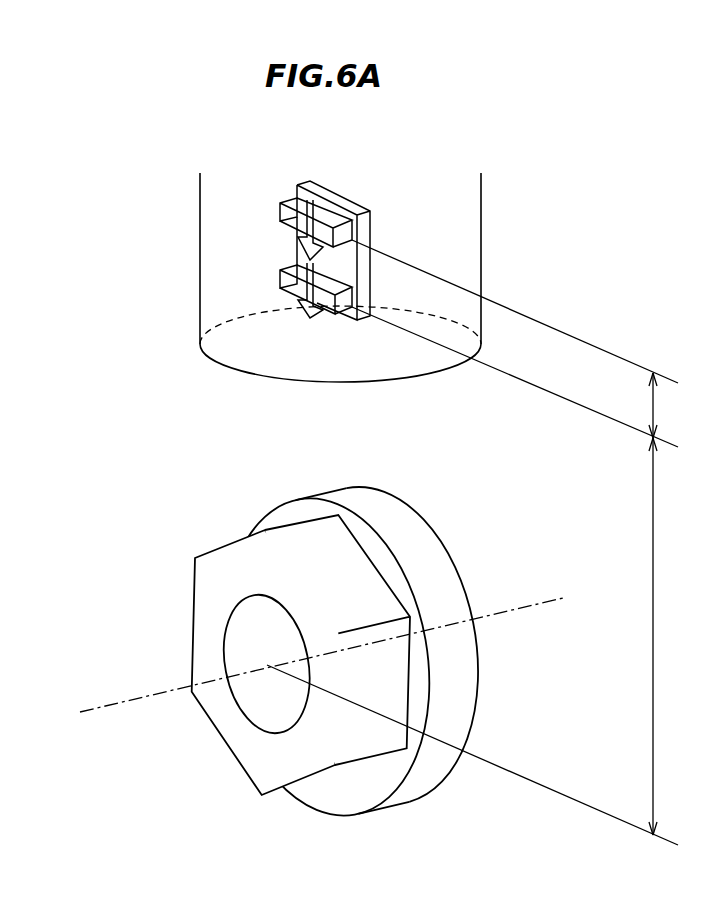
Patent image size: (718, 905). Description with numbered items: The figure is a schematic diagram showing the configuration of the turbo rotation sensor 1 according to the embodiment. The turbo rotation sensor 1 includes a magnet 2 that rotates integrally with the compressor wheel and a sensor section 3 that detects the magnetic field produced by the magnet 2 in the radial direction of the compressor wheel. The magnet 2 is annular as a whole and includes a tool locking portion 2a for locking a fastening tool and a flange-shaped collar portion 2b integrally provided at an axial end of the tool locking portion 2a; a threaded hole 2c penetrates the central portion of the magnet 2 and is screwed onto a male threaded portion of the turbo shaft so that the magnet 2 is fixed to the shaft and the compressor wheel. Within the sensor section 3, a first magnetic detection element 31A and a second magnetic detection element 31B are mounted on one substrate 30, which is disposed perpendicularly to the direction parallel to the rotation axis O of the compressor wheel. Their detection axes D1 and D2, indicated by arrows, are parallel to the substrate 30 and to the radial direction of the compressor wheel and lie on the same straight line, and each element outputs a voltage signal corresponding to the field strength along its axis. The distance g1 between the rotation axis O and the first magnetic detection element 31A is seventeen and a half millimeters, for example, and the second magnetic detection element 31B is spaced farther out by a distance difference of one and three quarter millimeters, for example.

The turbo rotation sensor 1 is at (492, 139).
The sensor section 3 is at (483, 263).
The substrate 30 is at (330, 197).
The first magnetic detection element 31A is at (290, 287).
The second magnetic detection element 31B is at (285, 198).
The detection axis D1 is at (280, 280).
The detection axis D2 is at (280, 210).
The magnet 2 is at (179, 549).
The tool locking portion 2a is at (205, 632).
The collar portion 2b is at (468, 715).
The threaded hole 2c is at (247, 700).
The rotation axis O is at (510, 608).
The distance g1 is at (478, 641).